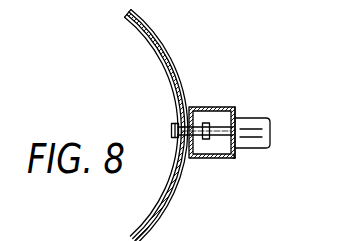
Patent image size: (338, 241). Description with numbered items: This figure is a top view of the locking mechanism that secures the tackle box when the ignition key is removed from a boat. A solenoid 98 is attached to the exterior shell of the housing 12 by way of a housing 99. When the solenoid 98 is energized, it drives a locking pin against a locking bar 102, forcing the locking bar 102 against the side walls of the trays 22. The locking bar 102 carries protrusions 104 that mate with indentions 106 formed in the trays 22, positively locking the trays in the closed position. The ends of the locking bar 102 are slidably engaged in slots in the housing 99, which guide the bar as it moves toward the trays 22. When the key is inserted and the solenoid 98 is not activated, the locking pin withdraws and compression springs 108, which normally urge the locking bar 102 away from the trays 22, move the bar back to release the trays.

The housing 12 is at (163, 208).
The trays 22 is at (158, 56).
The solenoid 98 is at (270, 132).
The housing 99 is at (234, 158).
The locking bar 102 is at (209, 138).
The protrusions 104 is at (205, 108).
The indentions 106 is at (174, 123).
The compression springs 108 is at (204, 123).